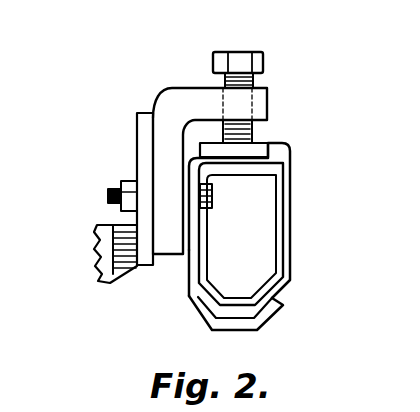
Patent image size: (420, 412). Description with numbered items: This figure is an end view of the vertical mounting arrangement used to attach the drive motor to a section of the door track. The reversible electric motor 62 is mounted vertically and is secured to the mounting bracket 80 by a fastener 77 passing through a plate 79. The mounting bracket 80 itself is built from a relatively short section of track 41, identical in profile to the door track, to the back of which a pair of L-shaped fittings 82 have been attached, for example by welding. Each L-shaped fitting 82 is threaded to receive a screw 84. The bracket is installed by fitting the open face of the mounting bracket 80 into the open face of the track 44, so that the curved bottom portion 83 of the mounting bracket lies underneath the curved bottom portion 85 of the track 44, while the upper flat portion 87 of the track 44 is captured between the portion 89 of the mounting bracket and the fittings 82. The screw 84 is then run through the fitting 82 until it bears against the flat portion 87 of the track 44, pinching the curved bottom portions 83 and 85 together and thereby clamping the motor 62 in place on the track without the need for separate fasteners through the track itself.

The L-shaped fitting 82 is at (180, 105).
The fastener 77 is at (147, 141).
The plate 79 is at (108, 193).
The reversible electric motor 62 is at (107, 247).
The screw 84 is at (263, 68).
The upper flat portion of the track 87 is at (266, 146).
The mounting bracket 80 is at (303, 157).
The short section of track 41 is at (190, 257).
The horizontal section of track 44 is at (277, 231).
The curved bottom portion of the track 85 is at (233, 305).
The portion of the mounting bracket 89 is at (243, 169).
The curved bottom portion of the mounting bracket 83 is at (200, 315).